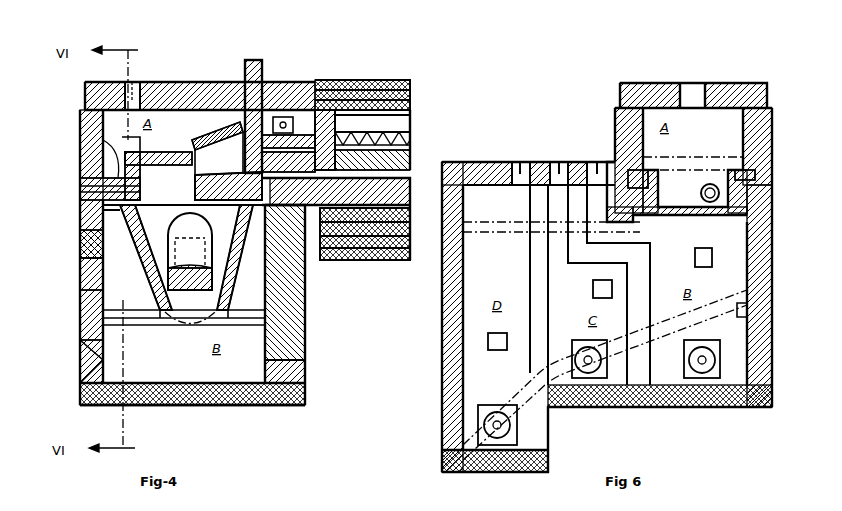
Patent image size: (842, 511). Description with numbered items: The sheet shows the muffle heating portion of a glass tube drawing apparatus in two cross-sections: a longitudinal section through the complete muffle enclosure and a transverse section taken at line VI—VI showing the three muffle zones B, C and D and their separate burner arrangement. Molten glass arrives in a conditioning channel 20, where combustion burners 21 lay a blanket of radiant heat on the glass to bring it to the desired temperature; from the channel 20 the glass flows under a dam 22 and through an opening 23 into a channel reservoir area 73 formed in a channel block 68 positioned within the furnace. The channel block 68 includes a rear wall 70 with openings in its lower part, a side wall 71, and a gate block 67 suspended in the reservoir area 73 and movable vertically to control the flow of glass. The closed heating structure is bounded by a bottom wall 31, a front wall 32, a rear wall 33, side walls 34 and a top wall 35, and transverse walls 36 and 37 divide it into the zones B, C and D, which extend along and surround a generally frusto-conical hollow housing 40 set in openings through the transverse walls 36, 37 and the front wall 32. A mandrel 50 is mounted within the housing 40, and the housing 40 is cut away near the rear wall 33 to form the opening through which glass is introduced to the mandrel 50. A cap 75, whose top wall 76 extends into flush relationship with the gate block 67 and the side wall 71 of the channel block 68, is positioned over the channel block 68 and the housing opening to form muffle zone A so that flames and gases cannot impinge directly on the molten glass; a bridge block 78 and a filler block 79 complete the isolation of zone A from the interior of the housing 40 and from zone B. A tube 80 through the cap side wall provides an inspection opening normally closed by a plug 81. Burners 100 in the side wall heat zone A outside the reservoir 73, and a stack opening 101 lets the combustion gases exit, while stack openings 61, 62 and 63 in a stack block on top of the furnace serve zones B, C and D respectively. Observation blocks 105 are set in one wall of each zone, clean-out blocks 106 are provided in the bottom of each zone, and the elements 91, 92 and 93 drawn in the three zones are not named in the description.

In FIG. 4, the conditioning channel 20 is at (411, 96).
In FIG. 4, the combustion burners 21 is at (411, 128).
In FIG. 4, the dam 22 is at (340, 150).
In FIG. 4, the opening 23 is at (345, 180).
In FIG. 4, the bottom wall 31 is at (240, 410).
In FIG. 6, the bottom wall 31 is at (640, 410).
In FIG. 6, the front wall 32 is at (441, 400).
In FIG. 4, the rear wall 33 is at (185, 393).
In FIG. 6, the rear wall 33 is at (773, 288).
In FIG. 4, the side walls 34 is at (82, 302).
In FIG. 6, the side walls 34 is at (470, 292).
In FIG. 4, the top wall 35 is at (212, 84).
In FIG. 6, the transverse wall 36 is at (645, 278).
In FIG. 6, the transverse wall 37 is at (548, 300).
In FIG. 4, the hollow housing 40 is at (240, 290).
In FIG. 6, the hollow housing 40 is at (505, 395).
In FIG. 4, the mandrel 50 is at (180, 243).
In FIG. 6, the stack opening 61 is at (597, 162).
In FIG. 6, the stack opening 62 is at (559, 162).
In FIG. 6, the stack opening 63 is at (520, 162).
In FIG. 4, the gate block 67 is at (255, 62).
In FIG. 4, the channel block 68 is at (325, 110).
In FIG. 4, the rear wall 70 is at (320, 135).
In FIG. 4, the side wall 71 is at (200, 138).
In FIG. 4, the channel reservoir area 73 is at (280, 116).
In FIG. 4, the cap 75 is at (285, 133).
In FIG. 4, the top wall 76 is at (228, 140).
In FIG. 4, the bridge block 78 is at (168, 152).
In FIG. 6, the bridge block 78 is at (712, 158).
In FIG. 4, the filler block 79 is at (105, 208).
In FIG. 6, the filler block 79 is at (675, 207).
In FIG. 4, the tube 80 is at (95, 142).
In FIG. 6, the tube 80 is at (720, 192).
In FIG. 4, the plug 81 is at (82, 186).
In FIG. 4, the tube 91 is at (88, 358).
In FIG. 6, the tube 91 is at (703, 375).
In FIG. 6, the tube 92 is at (588, 375).
In FIG. 6, the tube 93 is at (497, 440).
In FIG. 6, the burners 100 is at (615, 125).
In FIG. 4, the stack opening 101 is at (136, 88).
In FIG. 6, the stack opening 101 is at (694, 98).
In FIG. 4, the observation blocks 105 is at (83, 150).
In FIG. 6, the observation blocks 105 is at (488, 343).
In FIG. 4, the clean-out blocks 106 is at (306, 372).